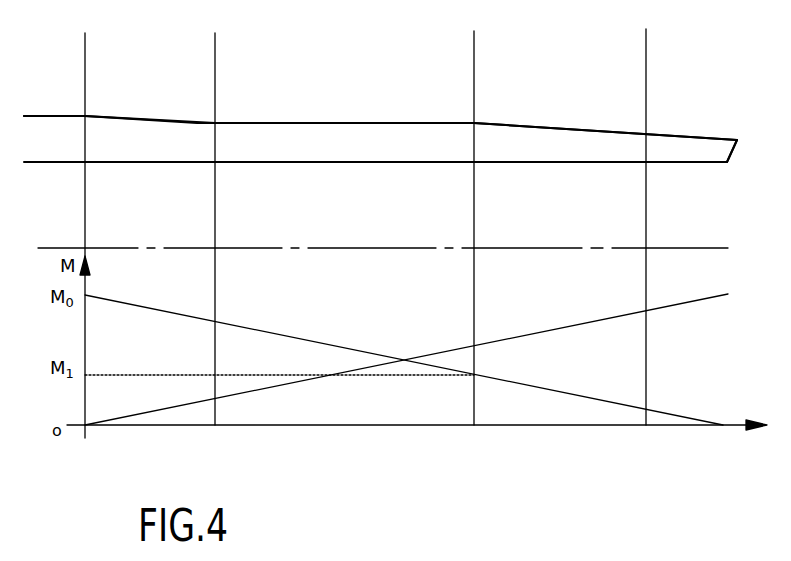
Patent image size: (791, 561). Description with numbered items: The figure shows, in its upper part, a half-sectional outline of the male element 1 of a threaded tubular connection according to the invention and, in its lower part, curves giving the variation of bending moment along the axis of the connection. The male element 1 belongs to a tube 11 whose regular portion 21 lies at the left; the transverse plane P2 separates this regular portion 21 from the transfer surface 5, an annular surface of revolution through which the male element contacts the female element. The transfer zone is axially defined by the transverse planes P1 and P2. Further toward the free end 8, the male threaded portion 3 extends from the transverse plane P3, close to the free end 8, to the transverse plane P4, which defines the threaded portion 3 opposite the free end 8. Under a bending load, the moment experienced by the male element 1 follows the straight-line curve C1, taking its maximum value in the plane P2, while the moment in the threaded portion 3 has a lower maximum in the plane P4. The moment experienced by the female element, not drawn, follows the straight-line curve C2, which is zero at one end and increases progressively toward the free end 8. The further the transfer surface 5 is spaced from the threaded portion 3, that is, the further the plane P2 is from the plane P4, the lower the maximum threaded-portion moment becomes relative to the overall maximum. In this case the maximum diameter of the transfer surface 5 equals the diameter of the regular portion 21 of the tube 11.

The male element 1 is at (667, 172).
The male threaded portion 3 is at (558, 128).
The transfer surface 5 is at (148, 117).
The free end 8 is at (732, 152).
The tube 11 is at (37, 137).
The regular portion 21 is at (63, 104).
The transverse plane P1 is at (216, 52).
The transverse plane P2 is at (86, 53).
The transverse plane P3 is at (647, 52).
The transverse plane P4 is at (475, 52).
The curve C1 is at (283, 336).
The curve C2 is at (693, 302).